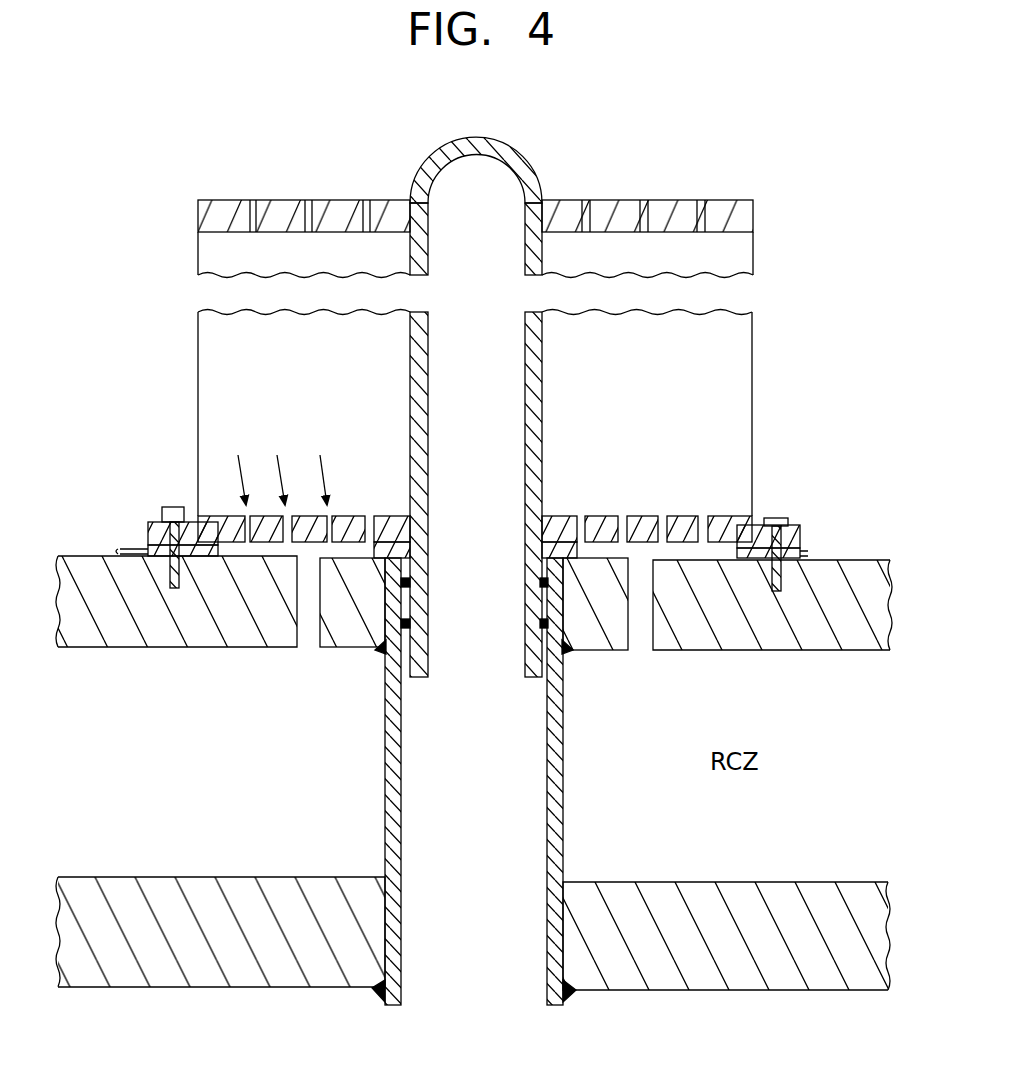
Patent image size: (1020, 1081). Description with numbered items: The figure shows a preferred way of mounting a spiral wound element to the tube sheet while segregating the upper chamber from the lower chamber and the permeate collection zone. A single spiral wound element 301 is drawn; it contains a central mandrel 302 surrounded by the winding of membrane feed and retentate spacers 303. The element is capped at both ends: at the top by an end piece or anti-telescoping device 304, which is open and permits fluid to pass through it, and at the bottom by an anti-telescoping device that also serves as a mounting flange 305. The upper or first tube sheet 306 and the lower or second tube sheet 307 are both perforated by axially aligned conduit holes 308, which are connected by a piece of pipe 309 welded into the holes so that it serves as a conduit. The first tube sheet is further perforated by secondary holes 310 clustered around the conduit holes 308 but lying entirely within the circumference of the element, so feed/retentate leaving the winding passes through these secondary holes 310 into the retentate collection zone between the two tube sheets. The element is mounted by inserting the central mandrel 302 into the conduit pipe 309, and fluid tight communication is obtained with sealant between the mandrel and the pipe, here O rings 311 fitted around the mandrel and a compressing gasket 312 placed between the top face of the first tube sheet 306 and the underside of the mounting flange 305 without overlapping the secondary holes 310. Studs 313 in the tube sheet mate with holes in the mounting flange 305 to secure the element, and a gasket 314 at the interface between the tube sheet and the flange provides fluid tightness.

The spiral wound element 301 is at (753, 414).
The central mandrel 302 is at (541, 430).
The winding of membrane feed and retentate spacers 303 is at (733, 362).
The end piece (anti-telescoping device) 304 is at (760, 225).
The mounting flange 305 is at (148, 533).
The first tube sheet 306 is at (875, 560).
The second tube sheet 307 is at (790, 880).
The conduit holes 308 is at (380, 649).
The piece of pipe 309 is at (568, 779).
The secondary holes 310 is at (303, 645).
The O rings 311 is at (540, 583).
The compressing gasket 312 is at (582, 520).
The studs 313 is at (775, 517).
The gasket 314 is at (122, 555).